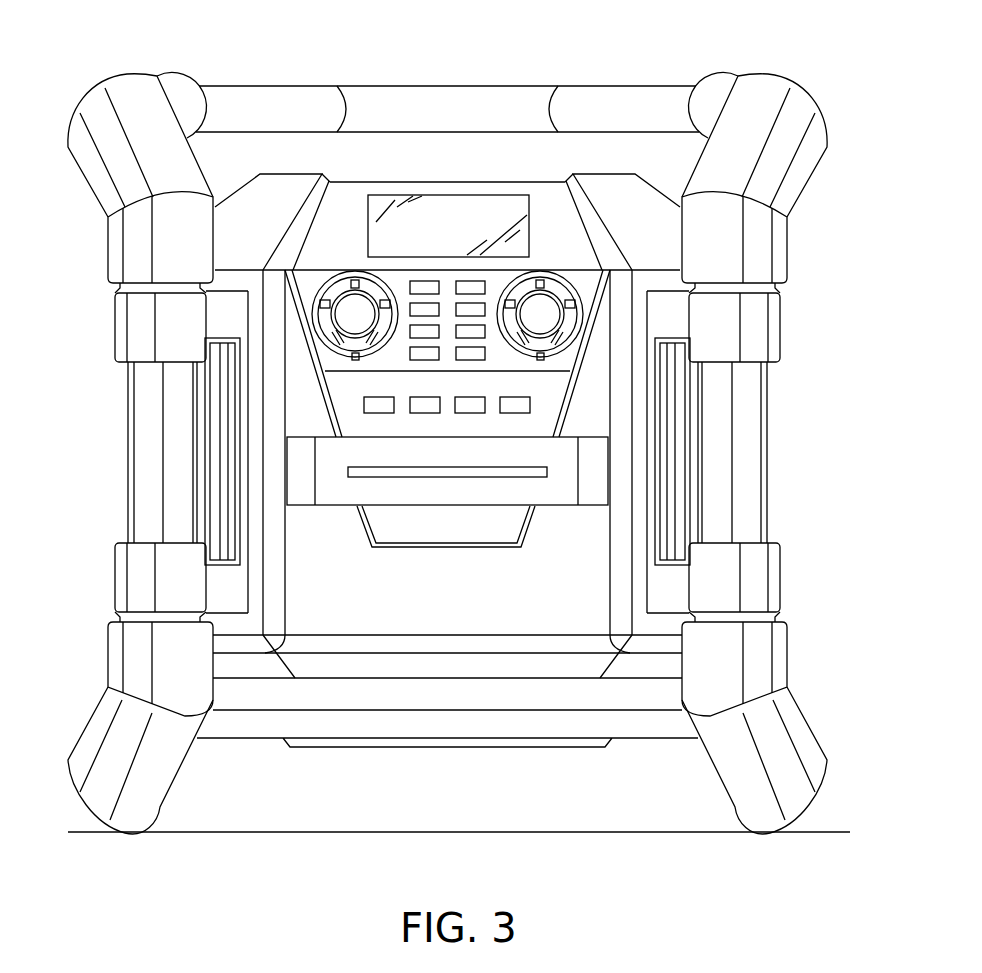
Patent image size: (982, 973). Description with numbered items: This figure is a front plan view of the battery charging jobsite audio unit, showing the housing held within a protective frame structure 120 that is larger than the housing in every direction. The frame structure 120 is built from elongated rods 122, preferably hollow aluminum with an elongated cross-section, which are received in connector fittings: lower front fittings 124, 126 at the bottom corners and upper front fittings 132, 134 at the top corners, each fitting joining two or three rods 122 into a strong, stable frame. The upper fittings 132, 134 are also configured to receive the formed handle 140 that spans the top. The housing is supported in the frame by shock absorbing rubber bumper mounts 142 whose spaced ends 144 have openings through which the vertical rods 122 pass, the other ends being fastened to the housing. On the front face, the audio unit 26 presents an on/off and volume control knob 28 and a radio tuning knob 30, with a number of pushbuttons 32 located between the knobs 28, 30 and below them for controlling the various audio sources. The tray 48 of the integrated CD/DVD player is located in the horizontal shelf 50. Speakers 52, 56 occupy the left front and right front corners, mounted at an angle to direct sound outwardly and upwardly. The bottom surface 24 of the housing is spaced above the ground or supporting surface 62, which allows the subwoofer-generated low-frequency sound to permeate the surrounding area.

The bottom surface 24 is at (455, 742).
The audio unit 26 is at (439, 248).
The on/off and volume control knob 28 is at (353, 302).
The radio tuning knob 30 is at (540, 302).
The pushbuttons 32 is at (425, 360).
The tray 48 is at (468, 478).
The horizontal shelf 50 is at (567, 492).
The speaker 52 is at (270, 185).
The speaker 56 is at (628, 183).
The ground or supporting surface 62 is at (833, 831).
The frame structure 120 is at (786, 247).
The elongated rods 122 is at (128, 373).
The lower front fitting 124 is at (143, 823).
The lower front fitting 126 is at (762, 832).
The upper front fitting 132 is at (125, 88).
The upper front fitting 134 is at (765, 83).
The handle 140 is at (441, 84).
The shock absorbing bumper mounts 142 is at (222, 398).
The spaced ends 144 is at (128, 225).